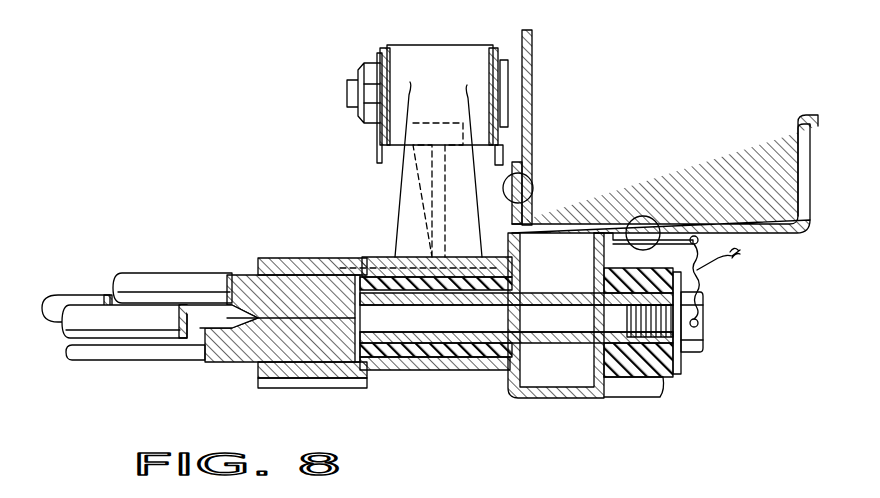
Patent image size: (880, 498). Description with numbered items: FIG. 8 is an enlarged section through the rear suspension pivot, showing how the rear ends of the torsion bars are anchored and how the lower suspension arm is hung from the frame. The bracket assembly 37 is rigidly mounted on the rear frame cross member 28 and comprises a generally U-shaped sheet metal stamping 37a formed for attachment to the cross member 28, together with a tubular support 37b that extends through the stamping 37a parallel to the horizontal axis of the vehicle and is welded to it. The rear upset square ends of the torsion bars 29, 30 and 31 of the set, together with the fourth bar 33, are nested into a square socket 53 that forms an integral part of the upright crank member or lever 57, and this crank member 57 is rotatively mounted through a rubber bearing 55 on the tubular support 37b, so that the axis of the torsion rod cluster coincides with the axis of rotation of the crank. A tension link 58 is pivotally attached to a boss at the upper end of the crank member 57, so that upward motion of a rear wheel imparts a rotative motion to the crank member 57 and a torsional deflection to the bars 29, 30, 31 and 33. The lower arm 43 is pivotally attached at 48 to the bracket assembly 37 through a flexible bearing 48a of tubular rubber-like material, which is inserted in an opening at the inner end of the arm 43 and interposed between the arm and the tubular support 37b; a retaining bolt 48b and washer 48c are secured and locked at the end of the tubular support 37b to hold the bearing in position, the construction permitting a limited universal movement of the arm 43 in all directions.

The rear frame cross member 28 is at (532, 106).
The torsion bar 29 is at (68, 333).
The torsion bar 30 is at (110, 361).
The torsion bar 31 is at (58, 293).
The torsion bar 33 is at (150, 270).
The bracket assembly 37 is at (512, 230).
The U-shaped sheet metal stamping 37a is at (565, 398).
The tubular support 37b is at (600, 327).
The lower arm 43 is at (648, 398).
The pivot of lower arm 48 is at (682, 372).
The flexible bearing 48a is at (604, 282).
The retaining bolt 48b is at (705, 340).
The washer 48c is at (682, 368).
The square socket 53 is at (345, 380).
The rubber bearing 55 is at (497, 374).
The crank member 57 is at (403, 213).
The tension link 58 is at (378, 150).